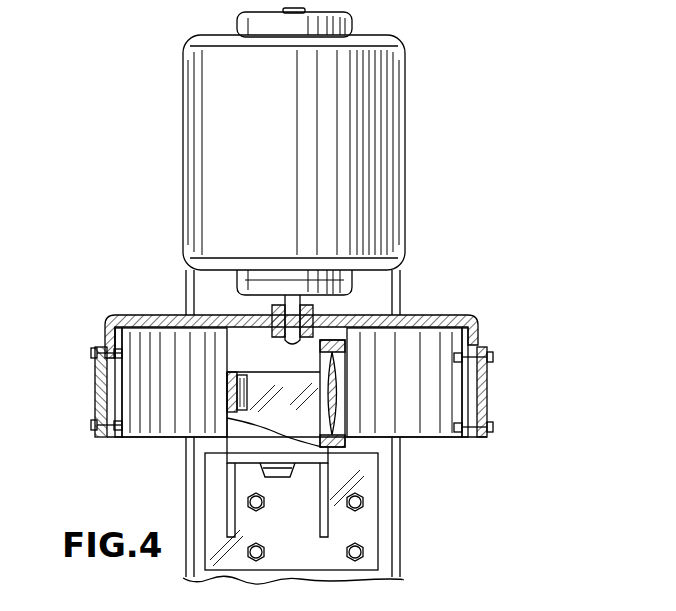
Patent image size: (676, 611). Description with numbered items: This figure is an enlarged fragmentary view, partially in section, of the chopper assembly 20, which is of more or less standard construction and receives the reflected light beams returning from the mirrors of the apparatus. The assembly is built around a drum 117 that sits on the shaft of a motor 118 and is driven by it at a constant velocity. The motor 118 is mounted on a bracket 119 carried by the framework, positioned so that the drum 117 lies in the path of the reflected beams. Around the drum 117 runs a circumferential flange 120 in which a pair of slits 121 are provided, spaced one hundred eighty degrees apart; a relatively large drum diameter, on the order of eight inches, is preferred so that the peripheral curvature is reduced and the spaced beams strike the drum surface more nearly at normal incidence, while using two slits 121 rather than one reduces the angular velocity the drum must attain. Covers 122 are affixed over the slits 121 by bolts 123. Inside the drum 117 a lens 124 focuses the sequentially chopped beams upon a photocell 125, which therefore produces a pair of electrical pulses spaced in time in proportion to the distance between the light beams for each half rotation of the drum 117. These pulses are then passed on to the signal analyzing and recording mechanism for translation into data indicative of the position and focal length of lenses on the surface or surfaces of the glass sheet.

The chopper assembly 20 is at (482, 242).
The drum 117 is at (152, 315).
The motor 118 is at (195, 100).
The bracket 119 is at (387, 536).
The circumferential flange 120 is at (155, 422).
The slits 121 is at (125, 437).
The covers 122 is at (98, 390).
The bolts 123 is at (95, 352).
The lens 124 is at (340, 378).
The photocell 125 is at (248, 395).